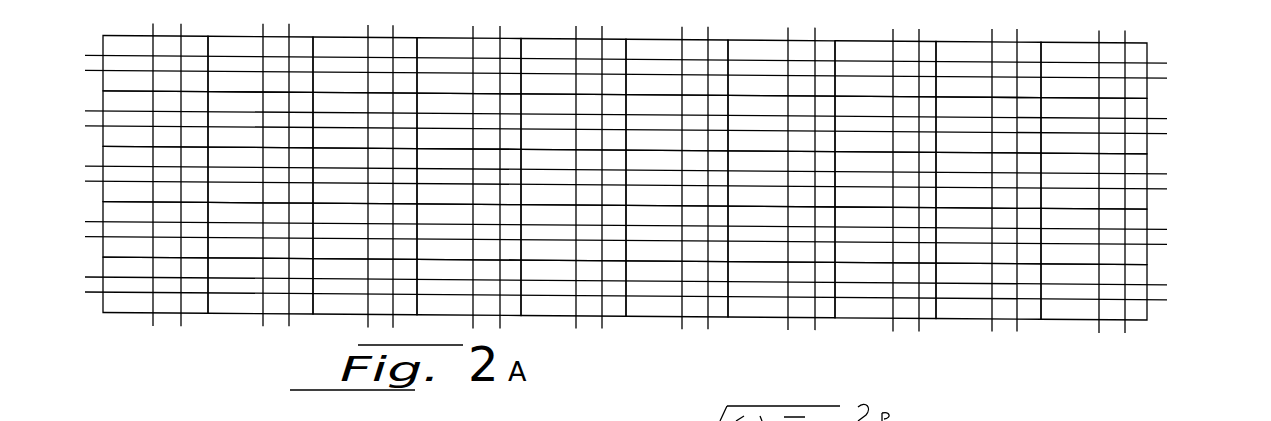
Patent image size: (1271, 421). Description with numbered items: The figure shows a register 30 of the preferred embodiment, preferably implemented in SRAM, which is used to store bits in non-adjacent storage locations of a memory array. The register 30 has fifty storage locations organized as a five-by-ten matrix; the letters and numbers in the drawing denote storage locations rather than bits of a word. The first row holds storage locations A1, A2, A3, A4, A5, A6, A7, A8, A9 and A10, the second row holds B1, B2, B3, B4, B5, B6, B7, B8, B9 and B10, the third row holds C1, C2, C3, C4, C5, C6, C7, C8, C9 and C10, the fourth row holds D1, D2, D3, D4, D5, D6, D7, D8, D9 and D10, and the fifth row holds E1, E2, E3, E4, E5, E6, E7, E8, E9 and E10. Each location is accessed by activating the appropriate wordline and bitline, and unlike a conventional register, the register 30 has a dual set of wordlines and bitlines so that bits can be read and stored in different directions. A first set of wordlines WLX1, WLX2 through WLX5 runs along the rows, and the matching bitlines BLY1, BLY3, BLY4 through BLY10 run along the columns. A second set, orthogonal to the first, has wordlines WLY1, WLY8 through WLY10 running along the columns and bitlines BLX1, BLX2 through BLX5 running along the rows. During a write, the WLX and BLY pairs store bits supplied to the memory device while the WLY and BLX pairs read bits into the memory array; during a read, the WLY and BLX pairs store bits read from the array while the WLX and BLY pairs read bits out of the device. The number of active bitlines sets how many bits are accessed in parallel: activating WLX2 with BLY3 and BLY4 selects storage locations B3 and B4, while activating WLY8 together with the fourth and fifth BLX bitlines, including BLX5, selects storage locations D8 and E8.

The register 30 is at (629, 182).
The bitline BLY1 is at (165, 163).
The bitline BLY3 is at (377, 164).
The bitline BLY4 is at (482, 164).
The bitline BLY10 is at (1107, 167).
The wordline WLY1 is at (192, 194).
The wordline WLY8 is at (934, 196).
The wordline WLY10 is at (1155, 197).
The wordline WLX1 is at (594, 56).
The wordline WLX2 is at (594, 111).
The wordline WLX5 is at (594, 277).
The bitline BLX1 is at (660, 78).
The bitline BLX2 is at (661, 133).
The bitline BLX5 is at (660, 299).
The storage location A1 is at (155, 64).
The storage location A2 is at (260, 64).
The storage location A3 is at (365, 65).
The storage location A4 is at (469, 66).
The storage location A5 is at (573, 67).
The storage location A6 is at (677, 67).
The storage location A7 is at (781, 68).
The storage location A8 is at (885, 69).
The storage location A9 is at (988, 69).
The storage location A10 is at (1094, 70).
The storage location B1 is at (155, 119).
The storage location B2 is at (260, 120).
The storage location B3 is at (365, 120).
The storage location B4 is at (469, 121).
The storage location B5 is at (573, 122).
The storage location B6 is at (677, 123).
The storage location B7 is at (781, 123).
The storage location B8 is at (885, 124).
The storage location B9 is at (988, 125).
The storage location B10 is at (1094, 126).
The storage location C1 is at (155, 174).
The storage location C2 is at (260, 175).
The storage location C3 is at (365, 176).
The storage location C4 is at (469, 177).
The storage location C5 is at (573, 177).
The storage location C6 is at (677, 178).
The storage location C7 is at (781, 179).
The storage location C8 is at (885, 180).
The storage location C9 is at (988, 180).
The storage location C10 is at (1094, 181).
The storage location D1 is at (155, 230).
The storage location D2 is at (260, 230).
The storage location D3 is at (365, 231).
The storage location D4 is at (469, 232).
The storage location D5 is at (573, 233).
The storage location D6 is at (677, 233).
The storage location D7 is at (781, 234).
The storage location D8 is at (885, 235).
The storage location D9 is at (988, 236).
The storage location D10 is at (1094, 236).
The storage location E1 is at (155, 285).
The storage location E2 is at (260, 286).
The storage location E3 is at (365, 287).
The storage location E4 is at (469, 287).
The storage location E5 is at (573, 288).
The storage location E6 is at (677, 289).
The storage location E7 is at (781, 290).
The storage location E8 is at (885, 290).
The storage location E9 is at (988, 291).
The storage location E10 is at (1094, 292).